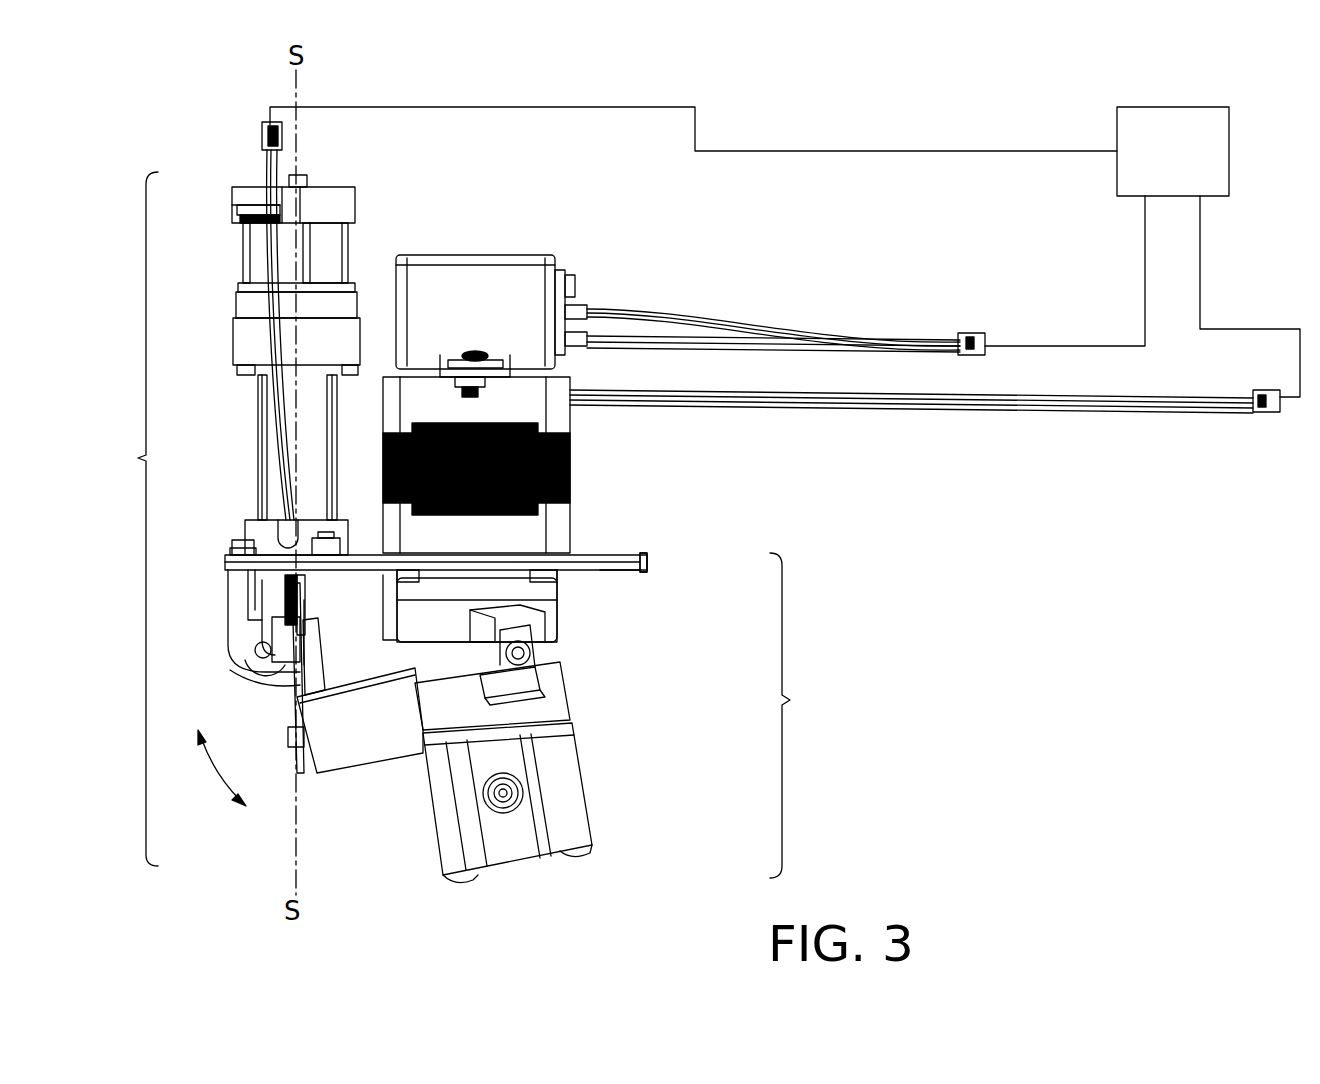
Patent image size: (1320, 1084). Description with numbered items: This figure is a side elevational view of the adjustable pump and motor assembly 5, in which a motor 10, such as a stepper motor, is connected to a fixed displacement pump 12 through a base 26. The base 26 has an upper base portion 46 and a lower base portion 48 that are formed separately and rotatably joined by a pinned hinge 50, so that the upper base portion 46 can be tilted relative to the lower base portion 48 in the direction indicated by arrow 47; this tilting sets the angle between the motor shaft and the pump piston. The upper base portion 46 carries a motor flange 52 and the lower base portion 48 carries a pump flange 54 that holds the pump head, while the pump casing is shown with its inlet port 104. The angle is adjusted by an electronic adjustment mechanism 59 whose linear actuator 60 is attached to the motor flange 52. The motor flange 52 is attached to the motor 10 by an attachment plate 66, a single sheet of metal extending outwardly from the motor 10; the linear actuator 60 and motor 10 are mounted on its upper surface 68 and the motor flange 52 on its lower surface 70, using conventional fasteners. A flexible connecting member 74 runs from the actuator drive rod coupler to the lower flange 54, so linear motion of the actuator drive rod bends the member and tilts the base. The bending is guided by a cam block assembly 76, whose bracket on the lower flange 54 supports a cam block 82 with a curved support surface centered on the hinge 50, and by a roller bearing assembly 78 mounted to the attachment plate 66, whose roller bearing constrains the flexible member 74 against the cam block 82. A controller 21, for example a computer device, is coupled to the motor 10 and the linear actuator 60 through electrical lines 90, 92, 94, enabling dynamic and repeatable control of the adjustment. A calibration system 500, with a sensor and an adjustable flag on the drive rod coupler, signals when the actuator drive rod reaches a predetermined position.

The adjustable pump and motor assembly 5 is at (176, 157).
The motor 10 is at (478, 254).
The pump 12 is at (578, 757).
The controller 21 is at (1178, 107).
The base 26 is at (800, 715).
The upper base portion 46 is at (555, 616).
The arrow 47 is at (225, 800).
The lower base portion 48 is at (565, 695).
The hinge 50 is at (535, 650).
The flange 52 is at (620, 558).
The flange 54 is at (358, 742).
The electronic adjustment mechanism 59 is at (129, 519).
The linear actuator 60 is at (232, 300).
The attachment plate 66 is at (650, 565).
The upper surface 68 is at (585, 553).
The lower surface 70 is at (640, 576).
The flexible connecting member 74 is at (300, 678).
The cam block assembly 76 is at (295, 715).
The roller bearing assembly 78 is at (237, 586).
The cam block 82 is at (275, 637).
The electrical line 90 is at (900, 342).
The electrical line 92 is at (1045, 410).
The electrical line 94 is at (262, 132).
The inlet port 104 is at (510, 815).
The calibration system 500 is at (322, 600).